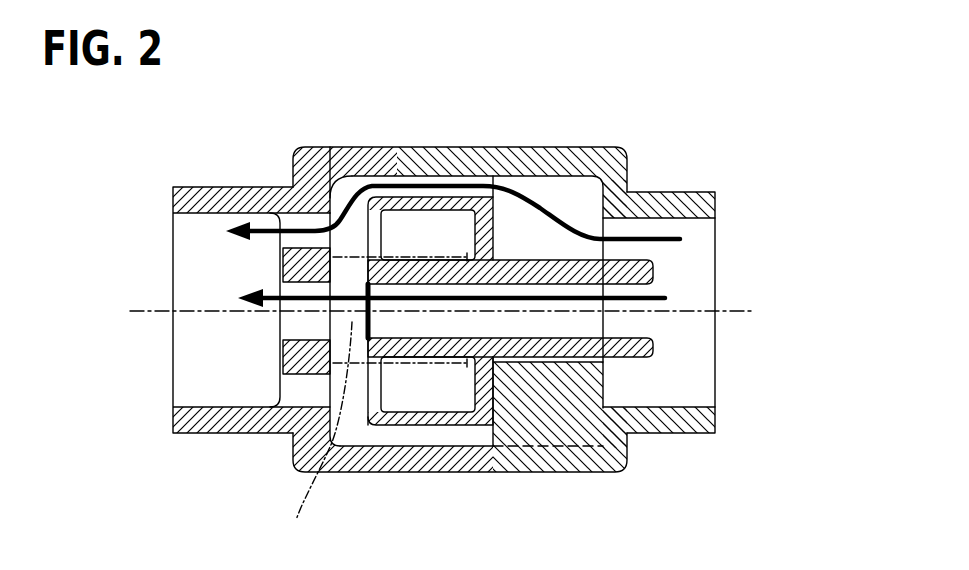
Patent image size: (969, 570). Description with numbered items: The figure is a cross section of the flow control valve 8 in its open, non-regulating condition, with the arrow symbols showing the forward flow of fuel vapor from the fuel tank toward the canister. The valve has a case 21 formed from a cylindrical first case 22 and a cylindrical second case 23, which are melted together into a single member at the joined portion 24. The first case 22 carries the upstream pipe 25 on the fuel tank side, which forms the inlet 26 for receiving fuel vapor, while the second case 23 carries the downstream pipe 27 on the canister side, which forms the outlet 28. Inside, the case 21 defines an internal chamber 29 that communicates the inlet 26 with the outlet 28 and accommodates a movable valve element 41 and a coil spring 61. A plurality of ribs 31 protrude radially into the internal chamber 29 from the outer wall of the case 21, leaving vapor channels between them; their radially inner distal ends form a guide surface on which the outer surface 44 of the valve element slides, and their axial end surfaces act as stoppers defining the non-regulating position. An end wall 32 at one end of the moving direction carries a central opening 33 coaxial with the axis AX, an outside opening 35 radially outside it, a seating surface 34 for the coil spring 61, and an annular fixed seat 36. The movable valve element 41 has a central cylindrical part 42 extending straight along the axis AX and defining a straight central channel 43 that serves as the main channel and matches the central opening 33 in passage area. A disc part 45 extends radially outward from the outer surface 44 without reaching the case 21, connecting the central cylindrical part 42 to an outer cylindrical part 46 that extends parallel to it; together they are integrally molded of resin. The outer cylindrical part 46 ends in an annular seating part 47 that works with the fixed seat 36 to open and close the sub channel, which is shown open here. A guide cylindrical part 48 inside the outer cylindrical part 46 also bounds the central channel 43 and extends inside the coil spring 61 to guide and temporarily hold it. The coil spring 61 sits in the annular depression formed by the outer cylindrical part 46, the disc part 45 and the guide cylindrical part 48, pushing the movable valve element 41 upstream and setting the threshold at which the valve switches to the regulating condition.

The flow control valve 8 is at (727, 141).
The case 21 is at (633, 193).
The first case 22 is at (440, 473).
The second case 23 is at (372, 472).
The joined portion 24 is at (398, 426).
The upstream pipe 25 is at (680, 432).
The inlet 26 is at (660, 380).
The downstream pipe 27 is at (222, 433).
The outlet 28 is at (217, 380).
The internal chamber 29 is at (474, 437).
The ribs 31 is at (538, 393).
The end wall 32 is at (293, 348).
The central opening 33 is at (295, 308).
The seating surface 34 is at (307, 277).
The outside opening 35 is at (293, 237).
The fixed seat 36 is at (300, 192).
The movable valve element 41 is at (580, 260).
The central cylindrical part 42 is at (545, 260).
The central channel 43 is at (658, 287).
The outer surface 44 is at (520, 260).
The disc part 45 is at (484, 175).
The outer cylindrical part 46 is at (438, 199).
The seating part 47 is at (357, 190).
The guide cylindrical part 48 is at (400, 260).
The coil spring 61 is at (317, 436).
The axis AX is at (728, 311).